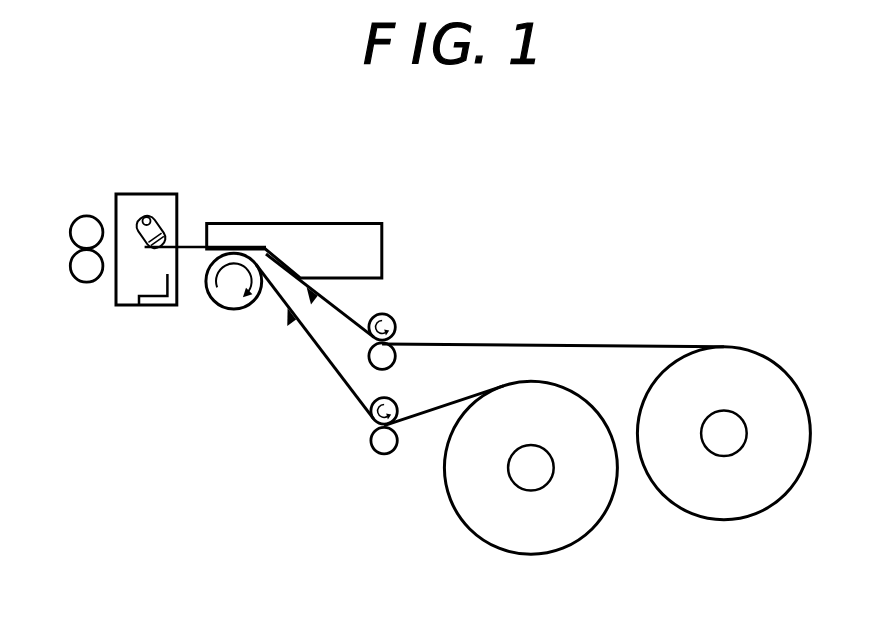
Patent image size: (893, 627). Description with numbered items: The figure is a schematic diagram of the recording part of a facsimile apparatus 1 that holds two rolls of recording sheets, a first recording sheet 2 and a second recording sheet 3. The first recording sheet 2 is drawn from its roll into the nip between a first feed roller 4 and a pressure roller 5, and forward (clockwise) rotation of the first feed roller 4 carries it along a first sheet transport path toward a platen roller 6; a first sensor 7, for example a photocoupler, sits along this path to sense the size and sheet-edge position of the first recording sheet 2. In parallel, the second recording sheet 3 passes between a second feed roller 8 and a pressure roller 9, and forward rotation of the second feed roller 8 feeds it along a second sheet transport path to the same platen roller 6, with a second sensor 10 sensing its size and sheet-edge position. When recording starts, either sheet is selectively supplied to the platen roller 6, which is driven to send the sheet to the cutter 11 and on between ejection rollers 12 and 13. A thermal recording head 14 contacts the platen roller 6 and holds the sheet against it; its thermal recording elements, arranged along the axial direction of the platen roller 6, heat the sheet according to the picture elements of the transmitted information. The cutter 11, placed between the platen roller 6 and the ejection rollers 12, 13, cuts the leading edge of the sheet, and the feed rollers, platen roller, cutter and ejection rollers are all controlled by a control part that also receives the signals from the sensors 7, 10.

The facsimile apparatus 1 is at (631, 313).
The first recording sheet 2 is at (581, 511).
The second recording sheet 3 is at (756, 491).
The first feed roller 4 is at (387, 395).
The pressure roller 5 is at (385, 446).
The platen roller 6 is at (226, 301).
The first sensor 7 is at (282, 318).
The second feed roller 8 is at (384, 310).
The pressure roller 9 is at (388, 350).
The second sensor 10 is at (306, 296).
The cutter 11 is at (153, 186).
The ejection roller 12 is at (79, 208).
The ejection roller 13 is at (79, 274).
The thermal recording head 14 is at (350, 216).